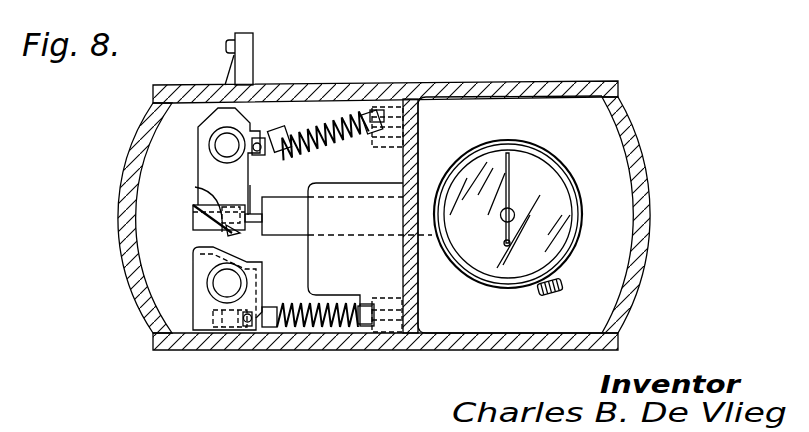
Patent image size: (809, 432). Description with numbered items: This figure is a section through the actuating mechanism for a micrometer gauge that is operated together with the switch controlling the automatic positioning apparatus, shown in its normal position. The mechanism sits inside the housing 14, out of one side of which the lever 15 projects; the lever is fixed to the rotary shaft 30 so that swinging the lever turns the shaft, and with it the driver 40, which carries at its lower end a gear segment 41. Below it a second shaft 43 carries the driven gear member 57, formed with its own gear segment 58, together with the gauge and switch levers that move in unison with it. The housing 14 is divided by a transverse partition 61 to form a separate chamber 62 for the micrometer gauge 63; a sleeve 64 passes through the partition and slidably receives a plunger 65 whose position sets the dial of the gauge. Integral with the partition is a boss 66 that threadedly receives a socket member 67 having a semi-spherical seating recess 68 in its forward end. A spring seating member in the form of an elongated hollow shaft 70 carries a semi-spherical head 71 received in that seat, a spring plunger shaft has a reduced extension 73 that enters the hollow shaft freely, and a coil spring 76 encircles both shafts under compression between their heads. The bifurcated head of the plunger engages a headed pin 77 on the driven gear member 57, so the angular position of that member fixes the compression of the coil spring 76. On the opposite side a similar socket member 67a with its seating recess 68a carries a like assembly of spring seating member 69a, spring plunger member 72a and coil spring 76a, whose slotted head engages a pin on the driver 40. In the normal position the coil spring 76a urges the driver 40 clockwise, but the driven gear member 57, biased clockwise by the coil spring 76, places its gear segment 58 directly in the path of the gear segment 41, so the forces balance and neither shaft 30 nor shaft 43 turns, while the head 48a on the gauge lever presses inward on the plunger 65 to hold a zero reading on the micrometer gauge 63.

The housing 14 is at (495, 83).
The lever 15 is at (250, 57).
The rotary shaft 30 is at (233, 143).
The driver 40 is at (202, 172).
The gear segment 41 is at (233, 233).
The second shaft 43 is at (222, 284).
The head 48a is at (195, 187).
The driven gear member 57 is at (198, 255).
The gear segment 58 is at (220, 231).
The transverse partition 61 is at (418, 157).
The chamber 62 is at (550, 113).
The micrometer gauge 63 is at (543, 173).
The sleeve 64 is at (284, 207).
The plunger 65 is at (252, 213).
The boss 66 is at (317, 272).
The socket member 67 is at (388, 330).
The socket member 67a is at (388, 112).
The semi-spherical seating recess 68 is at (367, 307).
The semi-spherical seating recess 68a is at (380, 112).
The spring seating member 69a is at (344, 143).
The elongated hollow shaft 70 is at (345, 327).
The semi-spherical head 71 is at (372, 327).
The spring plunger member 72a is at (306, 148).
The extension 73 is at (300, 326).
The coil spring 76 is at (310, 328).
The coil spring 76a is at (326, 123).
The headed pin 77 is at (248, 326).